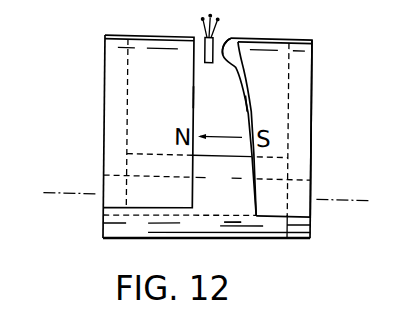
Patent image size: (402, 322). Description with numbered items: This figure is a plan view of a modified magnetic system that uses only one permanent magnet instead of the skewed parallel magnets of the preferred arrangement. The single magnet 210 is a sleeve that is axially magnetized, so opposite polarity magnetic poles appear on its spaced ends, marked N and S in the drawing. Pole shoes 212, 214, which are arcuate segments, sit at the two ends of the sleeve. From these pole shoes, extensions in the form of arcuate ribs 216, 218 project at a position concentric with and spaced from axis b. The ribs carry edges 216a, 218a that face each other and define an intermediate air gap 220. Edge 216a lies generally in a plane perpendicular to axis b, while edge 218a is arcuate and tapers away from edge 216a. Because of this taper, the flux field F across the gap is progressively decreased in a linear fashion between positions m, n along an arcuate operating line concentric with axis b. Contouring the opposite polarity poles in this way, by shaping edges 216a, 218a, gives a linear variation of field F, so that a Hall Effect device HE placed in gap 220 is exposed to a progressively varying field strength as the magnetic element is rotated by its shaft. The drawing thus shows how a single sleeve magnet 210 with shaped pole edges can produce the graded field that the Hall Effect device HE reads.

The single magnet 210 is at (262, 228).
The pole shoe 212 is at (117, 134).
The pole shoe 214 is at (293, 140).
The arcuate rib 216 is at (147, 67).
The edge 216a is at (195, 87).
The arcuate rib 218 is at (275, 71).
The edge 218a is at (247, 93).
The intermediate air gap 220 is at (222, 89).
The position m is at (197, 34).
The Hall Effect device HE is at (230, 33).
The flux field F is at (232, 169).
The position n is at (234, 210).
The axis b is at (353, 194).